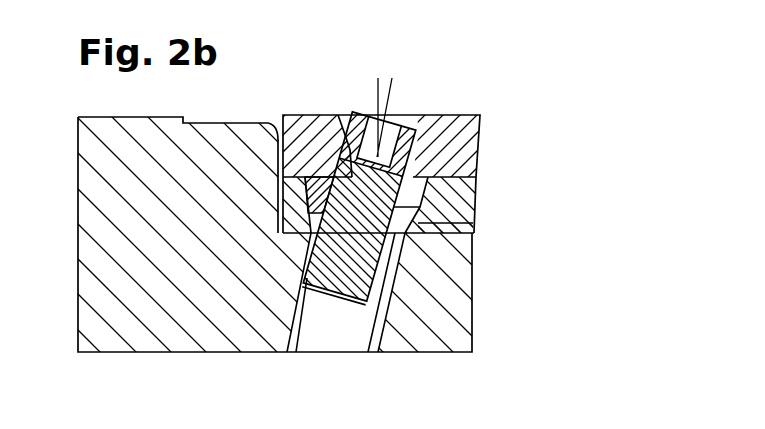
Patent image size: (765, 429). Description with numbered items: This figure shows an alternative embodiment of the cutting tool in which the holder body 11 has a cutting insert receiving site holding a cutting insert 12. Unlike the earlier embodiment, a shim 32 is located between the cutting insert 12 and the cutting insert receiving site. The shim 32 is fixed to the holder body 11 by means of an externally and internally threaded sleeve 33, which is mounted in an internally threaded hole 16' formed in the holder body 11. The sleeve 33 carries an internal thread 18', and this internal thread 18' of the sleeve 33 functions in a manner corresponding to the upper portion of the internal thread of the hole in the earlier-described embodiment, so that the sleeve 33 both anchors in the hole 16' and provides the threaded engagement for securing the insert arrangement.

The holder body 11 is at (233, 327).
The cutting insert 12 is at (450, 128).
The shim 32 is at (466, 197).
The externally and internally threaded sleeve 33 is at (473, 225).
The internally threaded hole 16' is at (413, 292).
The internal thread of the sleeve 18' is at (356, 252).